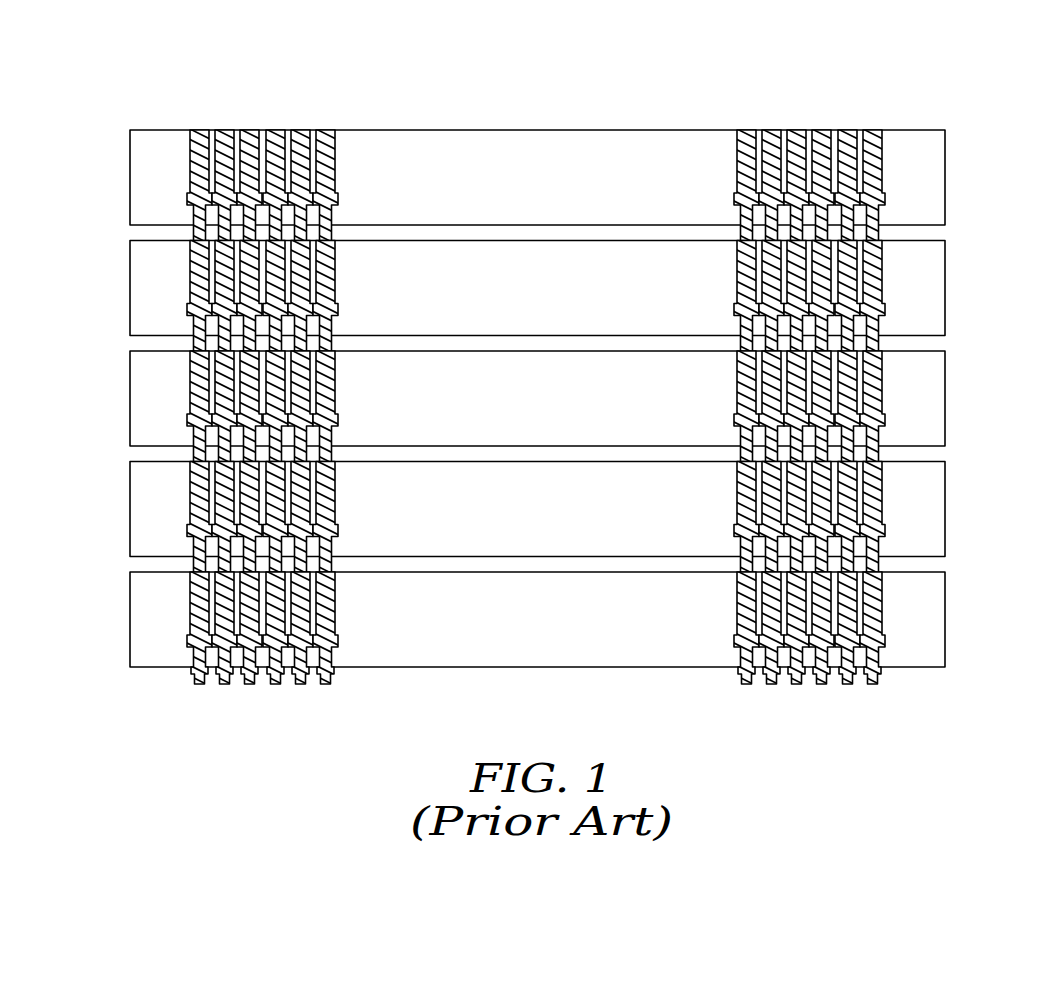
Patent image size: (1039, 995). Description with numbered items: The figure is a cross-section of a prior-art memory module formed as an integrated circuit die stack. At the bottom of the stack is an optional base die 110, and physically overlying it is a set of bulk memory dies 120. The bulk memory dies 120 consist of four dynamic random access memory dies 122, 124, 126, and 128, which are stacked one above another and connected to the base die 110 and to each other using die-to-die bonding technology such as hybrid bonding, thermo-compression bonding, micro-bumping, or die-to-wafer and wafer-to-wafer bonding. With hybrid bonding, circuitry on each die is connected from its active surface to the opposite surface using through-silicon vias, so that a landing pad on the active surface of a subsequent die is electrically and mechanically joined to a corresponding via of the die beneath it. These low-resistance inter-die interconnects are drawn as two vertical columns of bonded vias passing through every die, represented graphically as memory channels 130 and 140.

The base die 110 is at (130, 630).
The bulk memory dies 120 is at (113, 130).
The dynamic random access memory die 122 is at (947, 512).
The dynamic random access memory die 124 is at (947, 408).
The dynamic random access memory die 126 is at (947, 297).
The dynamic random access memory die 128 is at (947, 175).
The memory channel 130 is at (207, 90).
The memory channel 140 is at (782, 92).